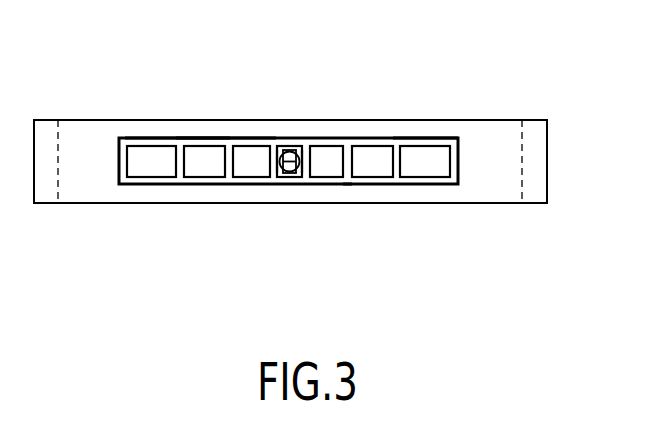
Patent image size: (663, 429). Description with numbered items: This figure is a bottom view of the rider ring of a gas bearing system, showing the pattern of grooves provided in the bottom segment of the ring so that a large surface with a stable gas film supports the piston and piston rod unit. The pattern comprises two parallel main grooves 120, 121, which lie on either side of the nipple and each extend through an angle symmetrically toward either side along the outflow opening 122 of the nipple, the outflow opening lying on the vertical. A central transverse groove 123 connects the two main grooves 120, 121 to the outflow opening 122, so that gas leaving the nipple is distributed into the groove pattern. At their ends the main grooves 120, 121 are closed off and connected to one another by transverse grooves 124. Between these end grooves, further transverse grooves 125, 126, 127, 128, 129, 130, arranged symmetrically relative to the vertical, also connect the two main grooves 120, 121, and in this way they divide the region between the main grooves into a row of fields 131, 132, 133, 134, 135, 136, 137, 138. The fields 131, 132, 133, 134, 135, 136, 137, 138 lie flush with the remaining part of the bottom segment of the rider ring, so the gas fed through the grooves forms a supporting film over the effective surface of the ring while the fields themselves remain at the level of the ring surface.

The main groove 120 is at (425, 139).
The main groove 121 is at (442, 197).
The outflow opening 122 is at (293, 178).
The central transverse groove 123 is at (293, 143).
The transverse groove 124 is at (118, 138).
The transverse groove 125 is at (177, 138).
The transverse groove 126 is at (226, 140).
The transverse groove 127 is at (268, 140).
The transverse groove 128 is at (305, 145).
The transverse groove 129 is at (350, 150).
The transverse groove 130 is at (398, 147).
The field 131 is at (150, 172).
The field 132 is at (203, 172).
The field 133 is at (245, 172).
The field 134 is at (277, 172).
The field 135 is at (297, 178).
The field 136 is at (320, 172).
The field 137 is at (375, 172).
The field 138 is at (428, 175).